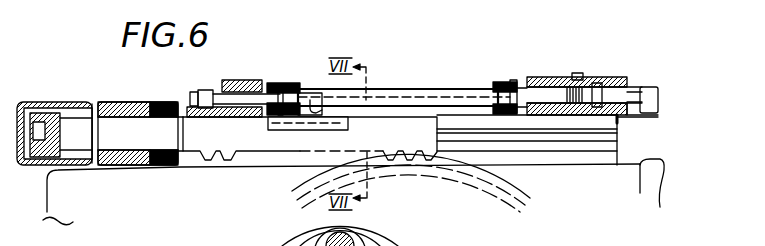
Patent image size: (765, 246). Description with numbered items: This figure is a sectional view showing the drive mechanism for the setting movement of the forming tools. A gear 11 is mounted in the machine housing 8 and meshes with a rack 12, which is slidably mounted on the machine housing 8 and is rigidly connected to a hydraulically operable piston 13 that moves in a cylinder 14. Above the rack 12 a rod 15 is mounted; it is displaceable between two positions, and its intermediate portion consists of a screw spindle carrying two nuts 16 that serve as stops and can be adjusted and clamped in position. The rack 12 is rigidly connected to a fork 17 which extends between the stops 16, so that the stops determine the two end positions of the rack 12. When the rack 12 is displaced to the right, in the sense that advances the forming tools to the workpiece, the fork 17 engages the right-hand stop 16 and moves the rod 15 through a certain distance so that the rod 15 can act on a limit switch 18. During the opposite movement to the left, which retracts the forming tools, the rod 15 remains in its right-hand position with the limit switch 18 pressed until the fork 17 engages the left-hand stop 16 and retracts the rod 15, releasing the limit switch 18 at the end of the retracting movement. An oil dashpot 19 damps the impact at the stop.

The machine housing 8 is at (62, 193).
The gear 11 is at (488, 182).
The rack 12 is at (247, 133).
The hydraulically operable piston 13 is at (46, 100).
The cylinder 14 is at (130, 100).
The rod 15 is at (412, 97).
The nuts 16 is at (283, 88).
The fork 17 is at (322, 113).
The limit switch 18 is at (658, 92).
The oil dashpot 19 is at (610, 77).